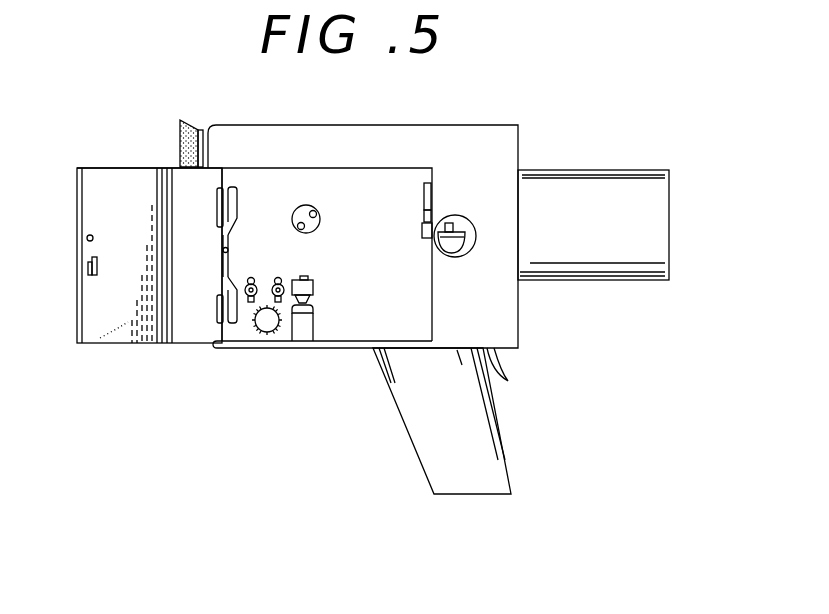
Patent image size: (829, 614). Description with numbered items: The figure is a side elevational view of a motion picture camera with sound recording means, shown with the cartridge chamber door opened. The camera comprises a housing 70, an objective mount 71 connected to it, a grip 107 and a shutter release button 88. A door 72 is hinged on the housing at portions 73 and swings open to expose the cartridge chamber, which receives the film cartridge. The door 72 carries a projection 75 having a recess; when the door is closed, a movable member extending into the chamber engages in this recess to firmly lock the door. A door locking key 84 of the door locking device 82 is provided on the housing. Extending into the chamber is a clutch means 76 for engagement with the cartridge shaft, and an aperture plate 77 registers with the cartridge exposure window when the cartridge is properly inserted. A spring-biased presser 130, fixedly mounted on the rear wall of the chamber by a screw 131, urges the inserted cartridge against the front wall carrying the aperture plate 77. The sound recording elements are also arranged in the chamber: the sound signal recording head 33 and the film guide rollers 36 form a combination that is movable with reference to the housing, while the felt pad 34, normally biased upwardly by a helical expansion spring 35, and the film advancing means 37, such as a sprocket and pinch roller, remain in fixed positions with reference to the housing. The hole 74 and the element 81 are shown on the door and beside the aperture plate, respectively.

The housing 70 is at (500, 326).
The objective mount 71 is at (652, 215).
The door 72 is at (96, 318).
The hinge portions 73 is at (218, 206).
The hole 74 is at (86, 237).
The projection 75 is at (98, 262).
The clutch means 76 is at (314, 207).
The aperture plate 77 is at (430, 185).
The contact 81 is at (432, 212).
The door locking device 82 is at (422, 228).
The door locking key 84 is at (458, 243).
The shutter release button 88 is at (509, 378).
The grip 107 is at (468, 458).
The spring-biased presser 130 is at (238, 200).
The screw 131 is at (230, 250).
The sound signal recording head 33 is at (312, 283).
The felt pad 34 is at (313, 312).
The helical expansion spring 35 is at (305, 332).
The film guide rollers 36 is at (251, 302).
The film advancing means 37 is at (267, 326).